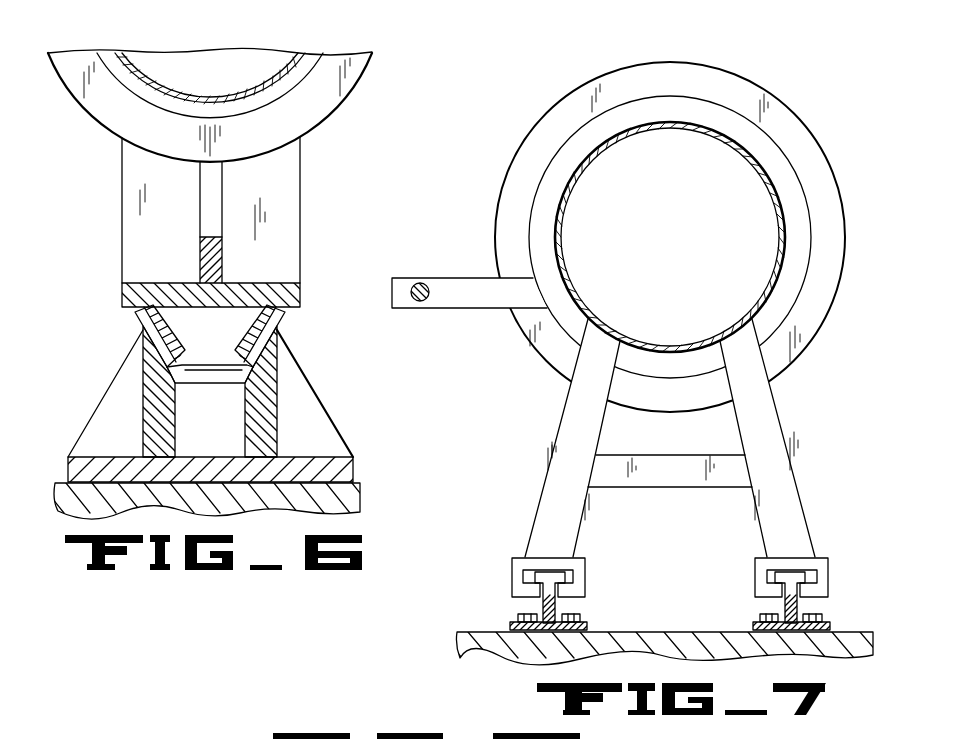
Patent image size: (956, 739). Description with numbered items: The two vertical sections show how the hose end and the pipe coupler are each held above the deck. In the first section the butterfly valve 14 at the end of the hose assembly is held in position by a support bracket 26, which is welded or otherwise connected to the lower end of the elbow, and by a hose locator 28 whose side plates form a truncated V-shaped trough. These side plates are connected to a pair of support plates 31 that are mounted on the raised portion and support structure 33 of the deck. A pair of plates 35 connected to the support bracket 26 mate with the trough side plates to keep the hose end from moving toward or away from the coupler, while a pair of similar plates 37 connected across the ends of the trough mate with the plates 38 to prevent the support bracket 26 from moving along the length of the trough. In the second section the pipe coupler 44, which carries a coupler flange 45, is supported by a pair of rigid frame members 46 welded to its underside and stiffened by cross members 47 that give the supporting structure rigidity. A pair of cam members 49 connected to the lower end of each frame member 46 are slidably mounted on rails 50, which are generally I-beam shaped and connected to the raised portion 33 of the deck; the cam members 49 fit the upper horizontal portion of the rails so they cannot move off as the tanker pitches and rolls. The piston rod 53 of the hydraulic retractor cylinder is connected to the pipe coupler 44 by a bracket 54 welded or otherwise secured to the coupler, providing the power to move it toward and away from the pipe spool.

In FIG. 6, the butterfly valve 14 is at (364, 75).
In FIG. 6, the support bracket 26 is at (126, 292).
In FIG. 6, the hose locator 28 is at (308, 376).
In FIG. 6, the support plates 31 is at (150, 437).
In FIG. 6, the raised portion and support structure 33 is at (355, 495).
In FIG. 7, the raised portion and support structure 33 is at (480, 638).
In FIG. 6, the plates 35 is at (186, 314).
In FIG. 6, the plates 37 is at (148, 328).
In FIG. 6, the plates 38 is at (250, 333).
In FIG. 7, the pipe coupler 44 is at (775, 193).
In FIG. 7, the coupler flange 45 is at (826, 197).
In FIG. 7, the rigid frame members 46 is at (768, 528).
In FIG. 7, the cross members 47 is at (678, 484).
In FIG. 7, the cam members 49 is at (755, 572).
In FIG. 7, the rails 50 is at (787, 597).
In FIG. 7, the piston rod 53 is at (421, 282).
In FIG. 7, the bracket 54 is at (453, 309).